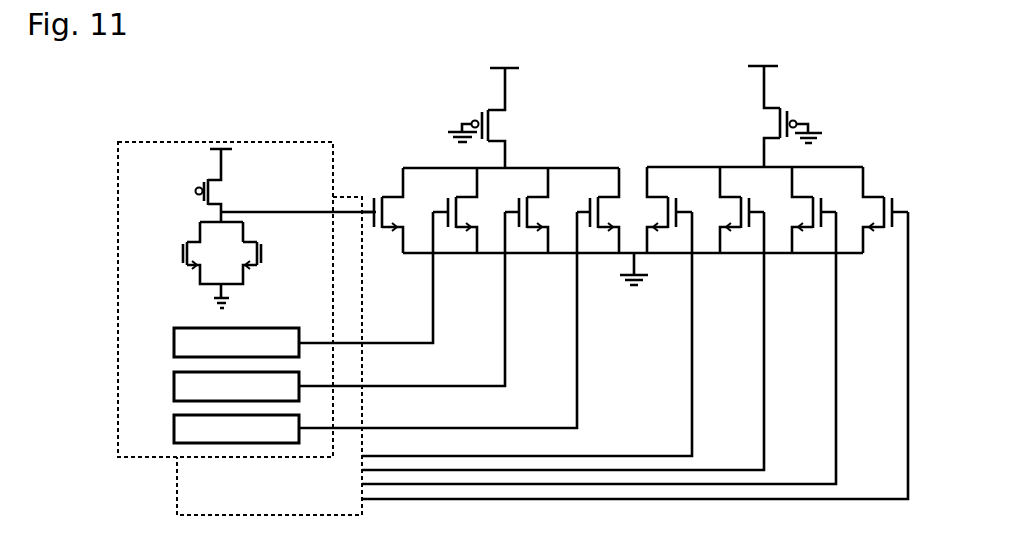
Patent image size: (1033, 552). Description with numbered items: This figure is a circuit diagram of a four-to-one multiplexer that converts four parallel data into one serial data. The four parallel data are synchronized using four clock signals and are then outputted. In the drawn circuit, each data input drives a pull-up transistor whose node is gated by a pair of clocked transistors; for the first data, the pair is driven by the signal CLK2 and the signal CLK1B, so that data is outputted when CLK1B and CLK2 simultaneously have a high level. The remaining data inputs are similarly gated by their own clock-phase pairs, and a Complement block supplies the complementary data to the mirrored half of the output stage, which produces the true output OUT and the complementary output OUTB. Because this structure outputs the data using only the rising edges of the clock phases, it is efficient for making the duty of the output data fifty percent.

The signal CLK2 is at (183, 254).
The signal CLK1B is at (261, 254).
The complement block generating DATAx[0]B to DATAx[3]B Complement is at (177, 488).
The output OUT with PMOS load OUT is at (511, 118).
The complementary output OUTB with PMOS load OUTB is at (755, 116).